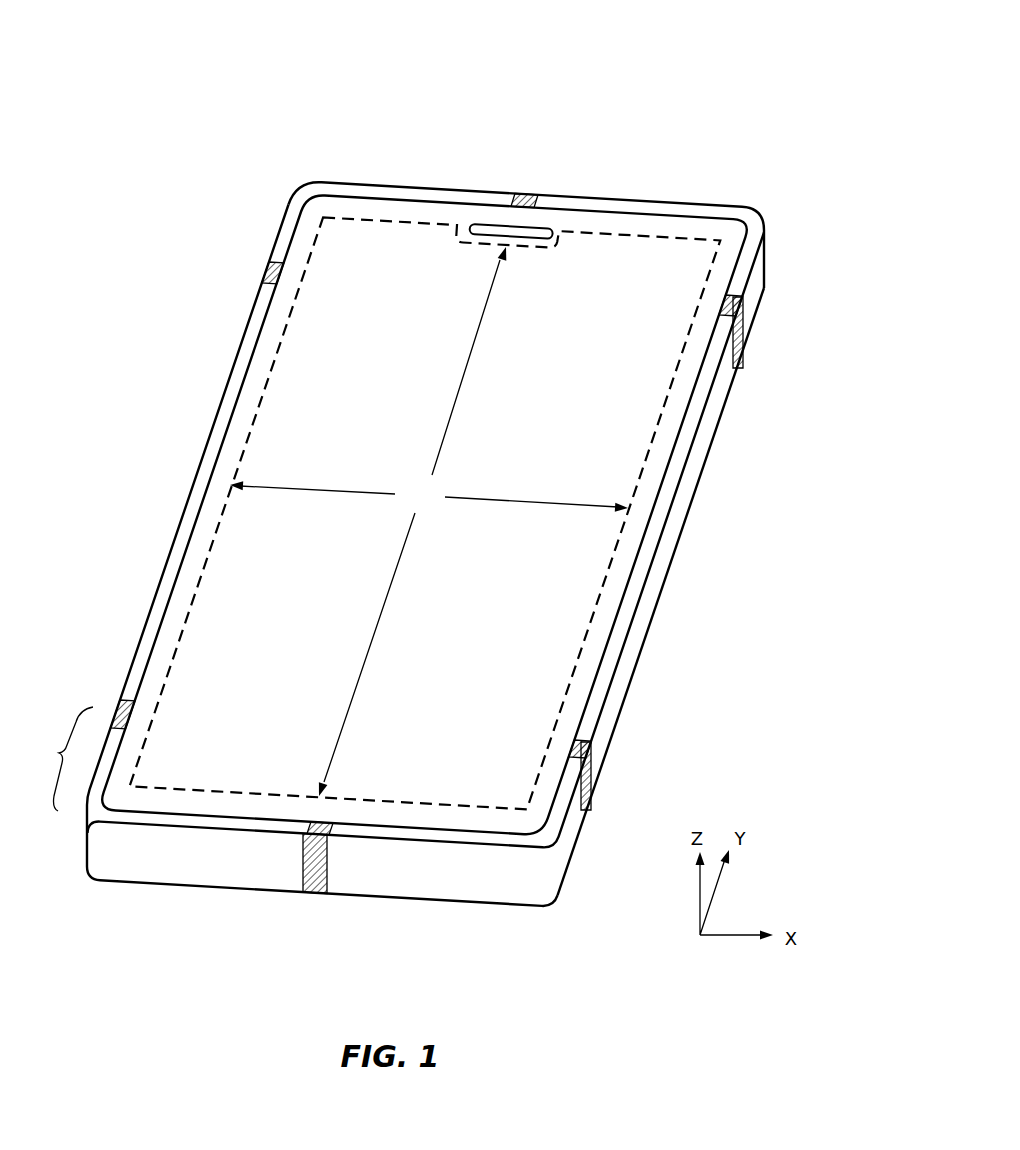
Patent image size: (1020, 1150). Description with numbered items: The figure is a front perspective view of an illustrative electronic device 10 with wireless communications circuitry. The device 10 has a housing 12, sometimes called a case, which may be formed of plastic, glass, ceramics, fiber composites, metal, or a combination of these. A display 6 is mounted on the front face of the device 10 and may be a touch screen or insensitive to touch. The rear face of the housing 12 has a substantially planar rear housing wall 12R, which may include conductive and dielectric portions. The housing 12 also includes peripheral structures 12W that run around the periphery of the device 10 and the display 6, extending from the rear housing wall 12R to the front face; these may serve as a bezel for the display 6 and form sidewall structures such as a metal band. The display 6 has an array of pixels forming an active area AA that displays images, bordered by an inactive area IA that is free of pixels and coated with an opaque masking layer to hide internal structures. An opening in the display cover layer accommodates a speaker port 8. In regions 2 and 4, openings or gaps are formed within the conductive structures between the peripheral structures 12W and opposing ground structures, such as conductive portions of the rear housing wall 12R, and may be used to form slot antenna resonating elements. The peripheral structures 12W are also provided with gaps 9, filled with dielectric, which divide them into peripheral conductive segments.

The electronic device 10 is at (437, 496).
The housing 12 is at (764, 257).
The peripheral structures 12W is at (648, 603).
The rear housing wall 12R is at (425, 907).
The region 4 is at (280, 173).
The region 2 is at (68, 759).
The display 6 is at (630, 268).
The active area AA is at (429, 521).
The inactive area IA is at (371, 210).
The speaker port 8 is at (544, 223).
The gaps 9 is at (520, 195).